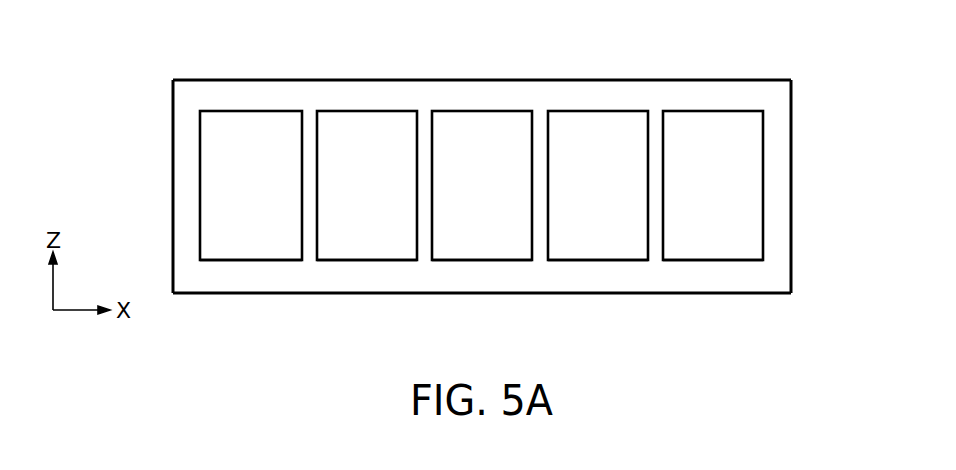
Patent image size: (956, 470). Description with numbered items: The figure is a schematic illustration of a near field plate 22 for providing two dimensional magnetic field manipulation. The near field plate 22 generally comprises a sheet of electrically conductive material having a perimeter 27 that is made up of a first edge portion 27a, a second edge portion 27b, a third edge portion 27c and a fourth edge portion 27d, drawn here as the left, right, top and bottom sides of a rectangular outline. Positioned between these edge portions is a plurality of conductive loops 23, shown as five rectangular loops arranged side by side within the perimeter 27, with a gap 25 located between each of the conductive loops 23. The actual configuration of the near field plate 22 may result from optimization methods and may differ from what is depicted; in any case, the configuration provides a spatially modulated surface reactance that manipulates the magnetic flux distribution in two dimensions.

The near field plate 22 is at (141, 110).
The conductive loops 23 is at (321, 167).
The gap 25 is at (239, 248).
The perimeter 27 is at (497, 79).
The first edge portion 27a is at (182, 172).
The second edge portion 27b is at (782, 170).
The third edge portion 27c is at (690, 87).
The fourth edge portion 27d is at (660, 285).